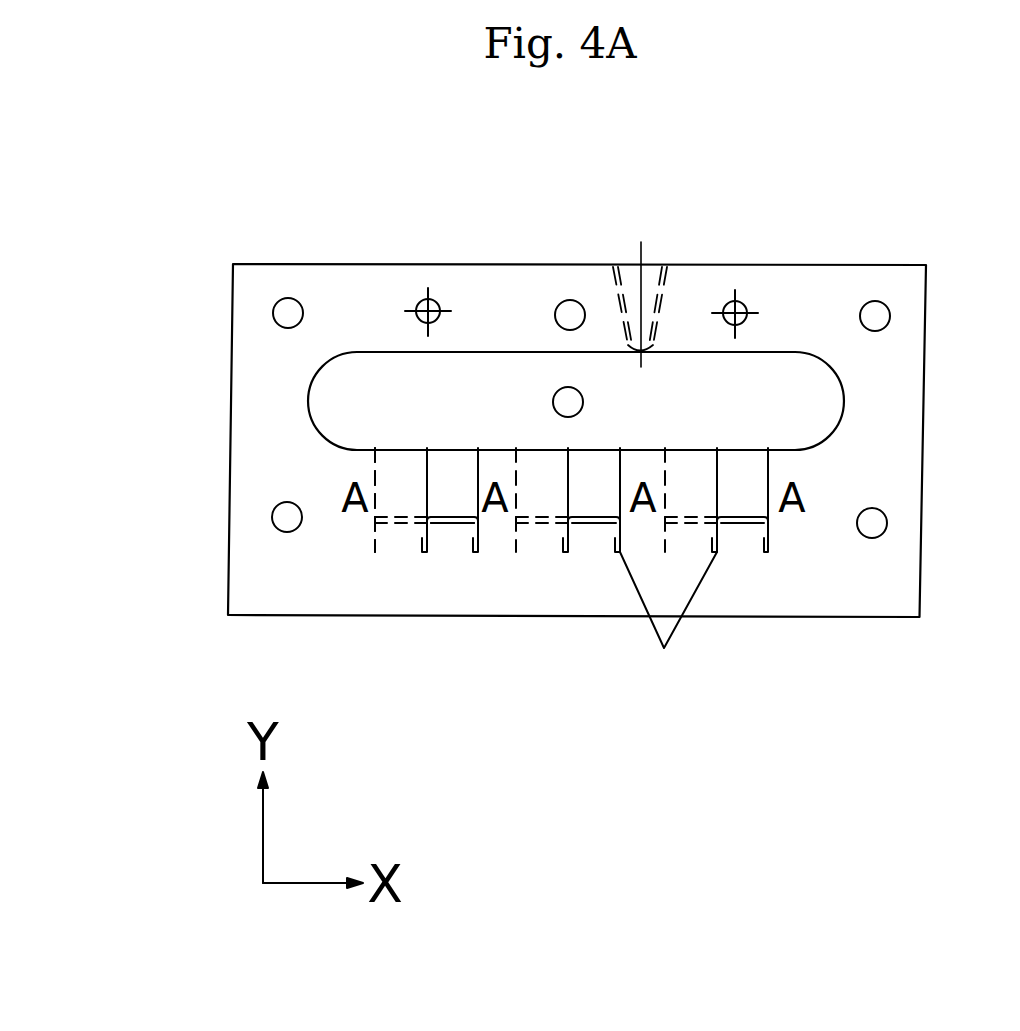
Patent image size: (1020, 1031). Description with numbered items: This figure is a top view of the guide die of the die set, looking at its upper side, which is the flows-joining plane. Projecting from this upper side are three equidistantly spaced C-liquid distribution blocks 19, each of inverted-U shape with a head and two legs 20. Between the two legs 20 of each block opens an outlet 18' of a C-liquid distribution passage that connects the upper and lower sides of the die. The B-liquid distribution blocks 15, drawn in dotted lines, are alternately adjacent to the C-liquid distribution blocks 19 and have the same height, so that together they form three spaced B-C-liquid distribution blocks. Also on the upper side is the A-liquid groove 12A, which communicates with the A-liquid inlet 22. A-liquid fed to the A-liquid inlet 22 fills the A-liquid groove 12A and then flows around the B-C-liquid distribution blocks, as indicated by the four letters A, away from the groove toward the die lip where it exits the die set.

The A-liquid groove 12A is at (377, 398).
The B-liquid distribution blocks 15 is at (387, 485).
The outlet 18' is at (457, 627).
The C-liquid distribution blocks 19 is at (458, 470).
The legs 20 is at (668, 627).
The A-liquid inlet 22 is at (650, 273).